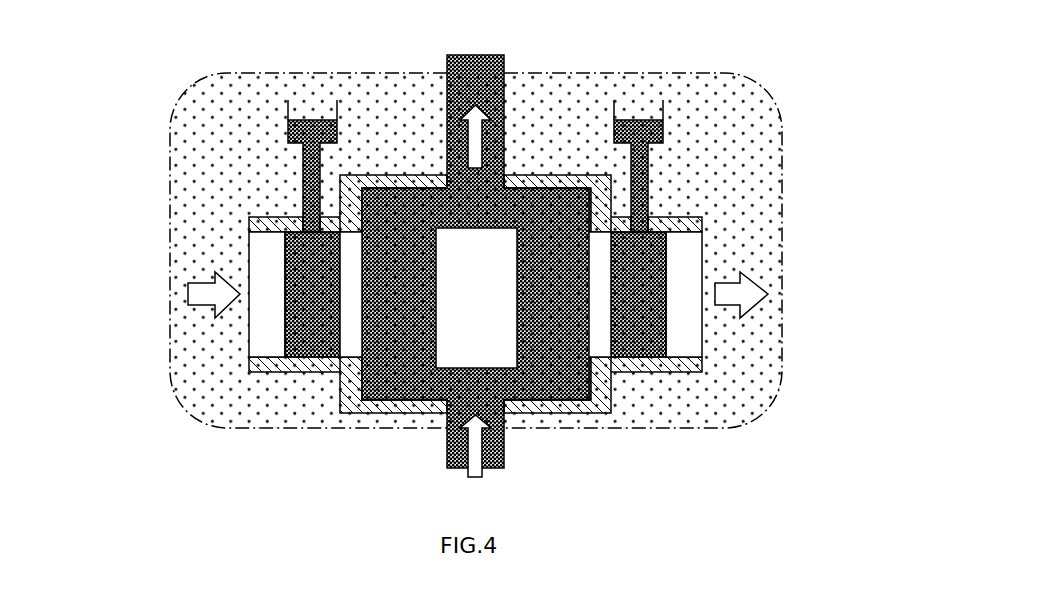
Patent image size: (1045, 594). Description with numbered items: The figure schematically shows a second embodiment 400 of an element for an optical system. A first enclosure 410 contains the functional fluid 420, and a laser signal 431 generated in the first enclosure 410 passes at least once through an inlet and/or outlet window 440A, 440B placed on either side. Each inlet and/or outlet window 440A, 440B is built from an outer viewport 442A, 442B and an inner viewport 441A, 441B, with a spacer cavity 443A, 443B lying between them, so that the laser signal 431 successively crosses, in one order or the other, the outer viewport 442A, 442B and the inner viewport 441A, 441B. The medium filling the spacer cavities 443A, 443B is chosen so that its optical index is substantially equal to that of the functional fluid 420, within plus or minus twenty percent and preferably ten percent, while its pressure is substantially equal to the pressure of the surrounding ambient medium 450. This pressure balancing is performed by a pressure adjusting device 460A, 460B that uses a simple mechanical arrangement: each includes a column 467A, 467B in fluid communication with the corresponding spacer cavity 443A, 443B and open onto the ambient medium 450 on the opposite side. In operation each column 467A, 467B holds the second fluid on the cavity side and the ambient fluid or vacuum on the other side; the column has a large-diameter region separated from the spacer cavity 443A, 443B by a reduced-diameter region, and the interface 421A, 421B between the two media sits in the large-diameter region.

The second embodiment of element 400 is at (149, 93).
The first enclosure 410 is at (375, 413).
The functional fluid 420 is at (430, 380).
The interface 421A is at (311, 118).
The interface 421B is at (640, 118).
The laser signal 431 is at (189, 298).
The inlet and/or outlet window 440A is at (189, 354).
The inlet and/or outlet window 440B is at (760, 354).
The inner viewport 441A is at (346, 340).
The inner viewport 441B is at (605, 340).
The outer viewport 442A is at (262, 342).
The outer viewport 442B is at (689, 342).
The spacer cavity 443A is at (313, 342).
The spacer cavity 443B is at (638, 342).
The ambient medium 450 is at (170, 212).
The pressure adjusting device 460A is at (279, 144).
The pressure adjusting device 460B is at (672, 144).
The column 467A is at (303, 175).
The column 467B is at (648, 175).